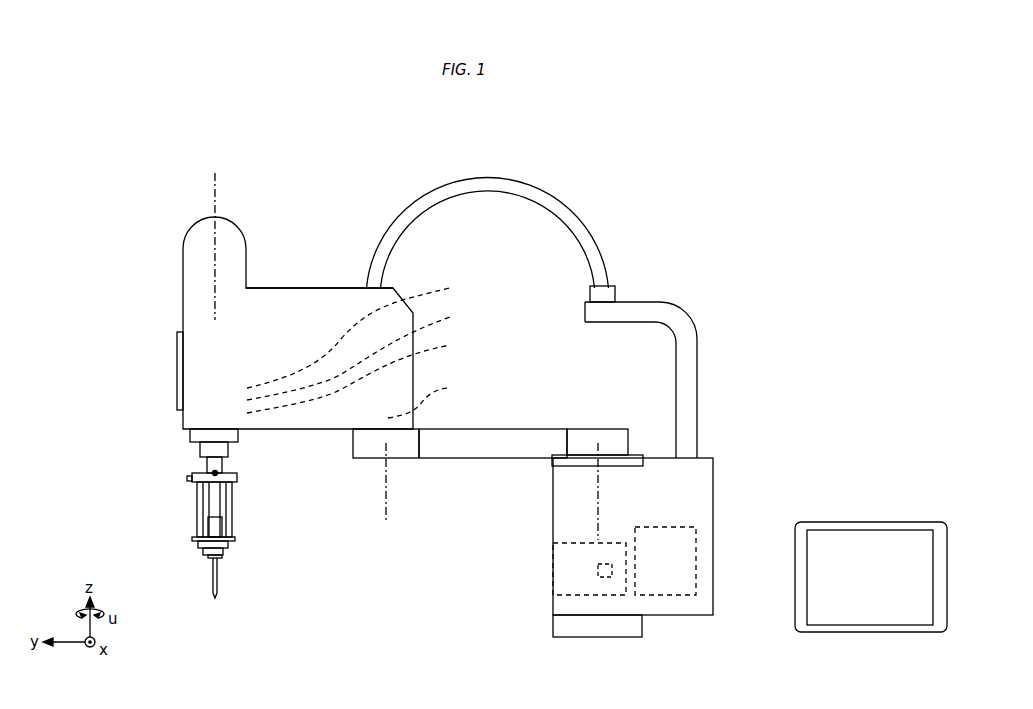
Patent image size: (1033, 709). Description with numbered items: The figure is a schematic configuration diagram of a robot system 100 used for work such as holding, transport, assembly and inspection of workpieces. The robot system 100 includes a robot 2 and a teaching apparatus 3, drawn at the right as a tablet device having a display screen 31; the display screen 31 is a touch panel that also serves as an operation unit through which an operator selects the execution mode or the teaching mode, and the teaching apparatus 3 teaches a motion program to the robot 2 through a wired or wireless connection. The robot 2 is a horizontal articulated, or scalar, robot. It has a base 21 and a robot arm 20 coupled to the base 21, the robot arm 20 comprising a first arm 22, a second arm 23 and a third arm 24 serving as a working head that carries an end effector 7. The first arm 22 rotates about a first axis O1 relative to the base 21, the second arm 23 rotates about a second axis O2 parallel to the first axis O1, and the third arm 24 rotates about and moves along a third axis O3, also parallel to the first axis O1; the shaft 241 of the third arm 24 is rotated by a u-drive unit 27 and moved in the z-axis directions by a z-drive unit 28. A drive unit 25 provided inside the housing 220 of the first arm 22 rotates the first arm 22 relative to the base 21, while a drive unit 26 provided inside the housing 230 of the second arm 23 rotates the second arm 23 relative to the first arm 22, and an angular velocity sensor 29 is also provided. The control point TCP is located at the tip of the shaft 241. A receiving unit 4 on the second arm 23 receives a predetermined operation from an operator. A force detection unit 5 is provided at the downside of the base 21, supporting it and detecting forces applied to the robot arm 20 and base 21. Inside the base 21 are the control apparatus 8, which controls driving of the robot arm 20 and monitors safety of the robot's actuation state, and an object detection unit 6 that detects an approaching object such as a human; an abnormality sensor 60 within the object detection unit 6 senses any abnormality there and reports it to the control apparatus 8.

The robot system 100 is at (652, 160).
The robot 2 is at (427, 186).
The robot arm 20 is at (497, 426).
The base 21 is at (690, 490).
The first arm 22 is at (448, 443).
The housing 220 is at (545, 443).
The second arm 23 is at (200, 295).
The housing 230 is at (302, 284).
The third arm 24 is at (212, 450).
The shaft 241 is at (222, 462).
The drive unit 25 is at (608, 445).
The drive unit 26 is at (431, 398).
The u-drive unit 27 is at (360, 374).
The z-drive unit 28 is at (360, 354).
The angular velocity sensor 29 is at (360, 333).
The teaching apparatus 3 is at (908, 521).
The display screen 31 is at (872, 600).
The receiving unit 4 is at (177, 370).
The force detection unit 5 is at (573, 625).
The object detection unit 6 is at (575, 595).
The abnormality sensor 60 is at (605, 577).
The end effector 7 is at (243, 498).
The control apparatus 8 is at (697, 563).
The control point TCP is at (213, 473).
The first axis O1 is at (598, 522).
The second axis O2 is at (385, 483).
The third axis O3 is at (222, 182).